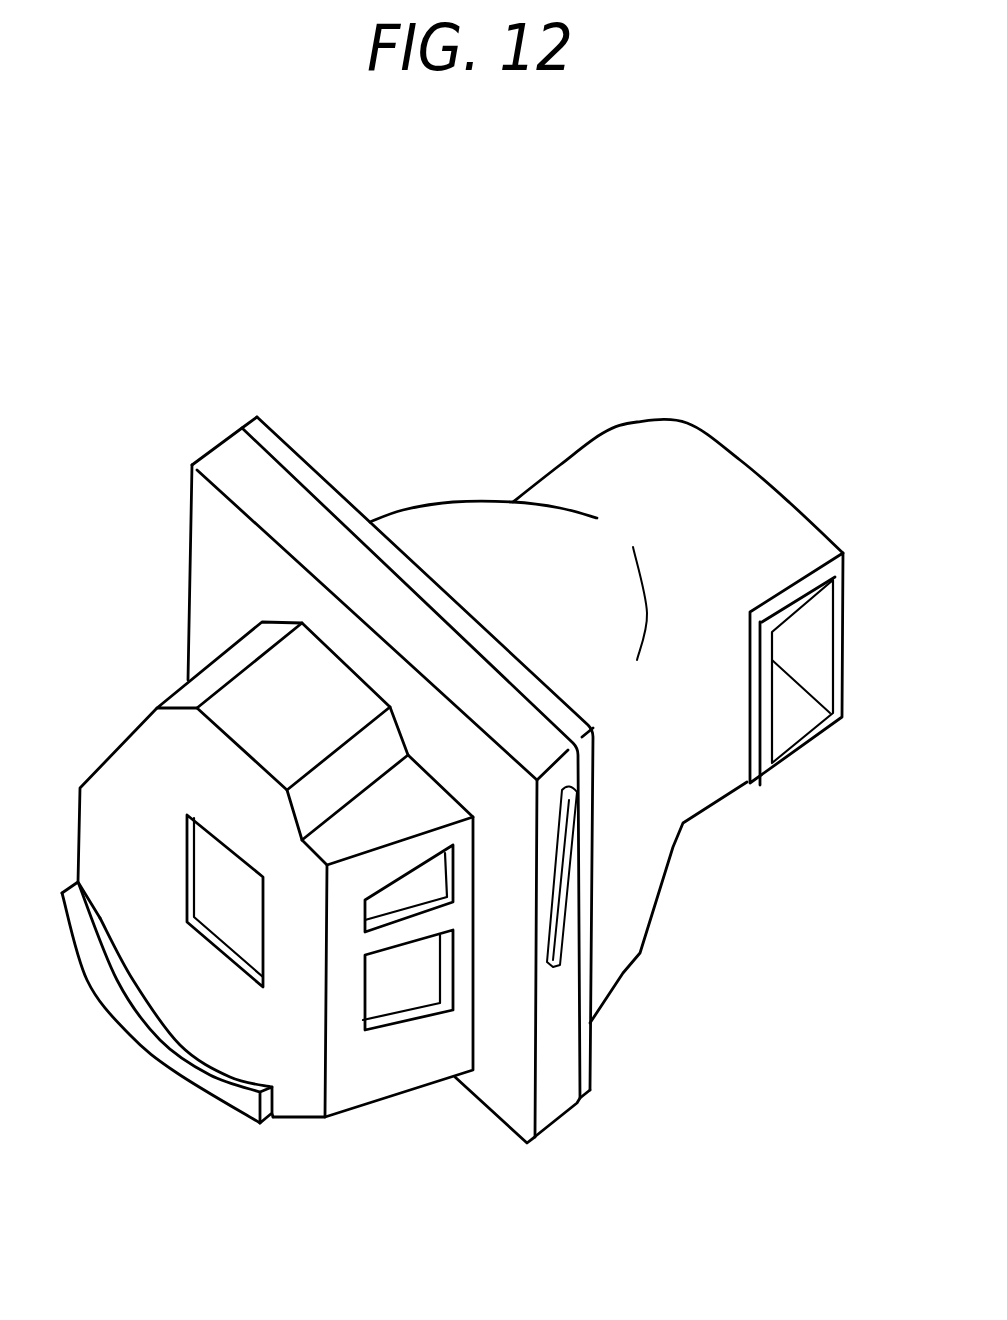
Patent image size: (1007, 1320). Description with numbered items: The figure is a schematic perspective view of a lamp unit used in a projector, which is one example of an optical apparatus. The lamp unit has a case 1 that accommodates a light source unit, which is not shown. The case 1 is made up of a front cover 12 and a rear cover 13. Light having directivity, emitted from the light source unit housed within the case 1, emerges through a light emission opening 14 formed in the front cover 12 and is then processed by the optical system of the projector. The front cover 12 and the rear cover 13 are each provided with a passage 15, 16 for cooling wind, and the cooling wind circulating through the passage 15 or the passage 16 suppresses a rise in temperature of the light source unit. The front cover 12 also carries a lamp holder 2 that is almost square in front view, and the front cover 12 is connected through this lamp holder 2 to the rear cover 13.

The case 1 is at (477, 407).
The lamp holder 2 is at (553, 1117).
The front cover 12 is at (368, 1110).
The rear cover 13 is at (623, 973).
The light emission opening 14 is at (215, 913).
The passage 15 is at (423, 888).
The passage 16 is at (792, 725).